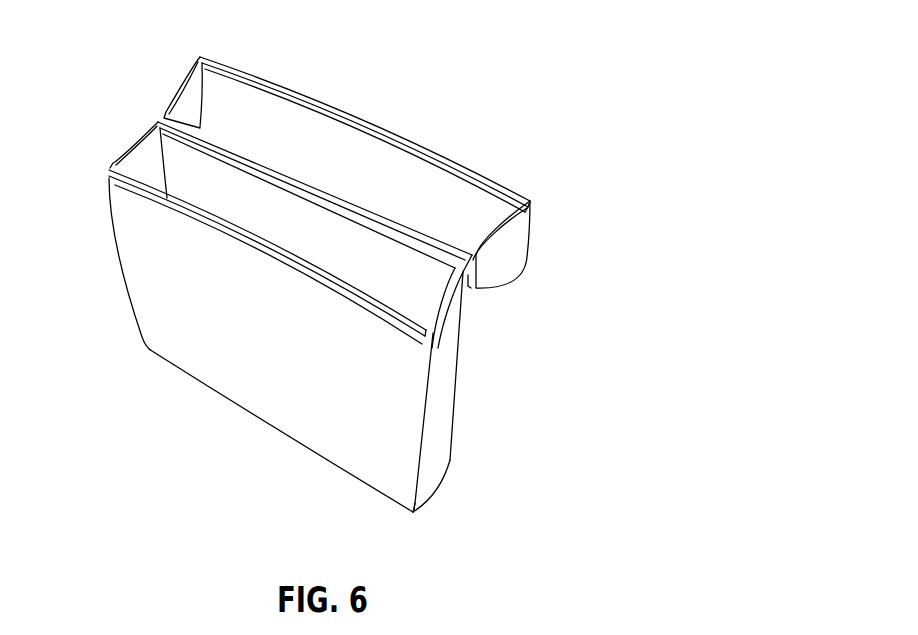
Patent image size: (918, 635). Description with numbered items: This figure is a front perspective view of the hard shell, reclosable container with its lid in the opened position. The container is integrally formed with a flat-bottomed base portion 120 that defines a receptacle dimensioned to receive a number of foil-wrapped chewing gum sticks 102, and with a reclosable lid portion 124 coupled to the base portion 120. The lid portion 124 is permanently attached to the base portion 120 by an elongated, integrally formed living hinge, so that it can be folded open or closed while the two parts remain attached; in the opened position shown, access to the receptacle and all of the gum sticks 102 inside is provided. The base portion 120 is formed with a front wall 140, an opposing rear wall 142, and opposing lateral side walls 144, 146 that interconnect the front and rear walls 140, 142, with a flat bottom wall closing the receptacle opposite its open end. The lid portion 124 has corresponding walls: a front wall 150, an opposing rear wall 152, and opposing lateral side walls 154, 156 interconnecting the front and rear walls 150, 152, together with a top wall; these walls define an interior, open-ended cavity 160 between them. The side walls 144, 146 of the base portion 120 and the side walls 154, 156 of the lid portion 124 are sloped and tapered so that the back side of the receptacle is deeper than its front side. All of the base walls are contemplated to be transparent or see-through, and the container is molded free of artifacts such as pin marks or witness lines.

The chewing gum sticks 102 is at (461, 383).
The base portion 120 is at (453, 503).
The lid portion 124 is at (540, 188).
The front wall 140 is at (185, 344).
The rear wall 142 is at (452, 432).
The lateral side wall 144 is at (118, 250).
The lateral side wall 146 is at (435, 465).
The front wall 150 is at (487, 173).
The rear wall 152 is at (467, 288).
The lateral side wall 154 is at (188, 78).
The lateral side wall 156 is at (507, 258).
The cavity 160 is at (397, 163).